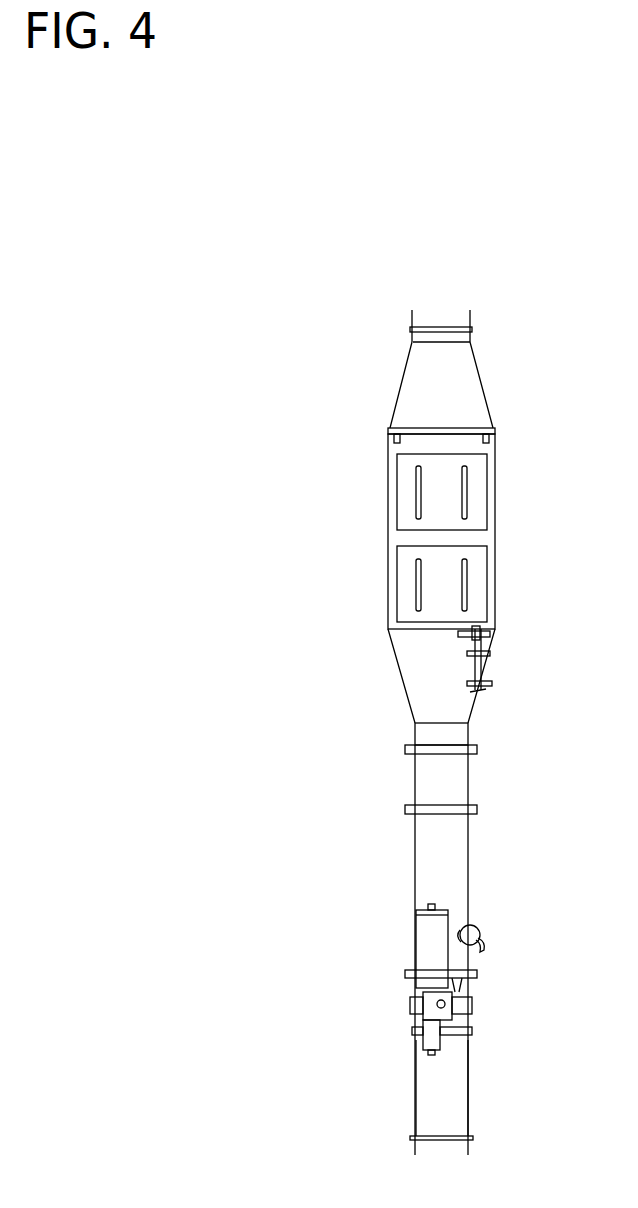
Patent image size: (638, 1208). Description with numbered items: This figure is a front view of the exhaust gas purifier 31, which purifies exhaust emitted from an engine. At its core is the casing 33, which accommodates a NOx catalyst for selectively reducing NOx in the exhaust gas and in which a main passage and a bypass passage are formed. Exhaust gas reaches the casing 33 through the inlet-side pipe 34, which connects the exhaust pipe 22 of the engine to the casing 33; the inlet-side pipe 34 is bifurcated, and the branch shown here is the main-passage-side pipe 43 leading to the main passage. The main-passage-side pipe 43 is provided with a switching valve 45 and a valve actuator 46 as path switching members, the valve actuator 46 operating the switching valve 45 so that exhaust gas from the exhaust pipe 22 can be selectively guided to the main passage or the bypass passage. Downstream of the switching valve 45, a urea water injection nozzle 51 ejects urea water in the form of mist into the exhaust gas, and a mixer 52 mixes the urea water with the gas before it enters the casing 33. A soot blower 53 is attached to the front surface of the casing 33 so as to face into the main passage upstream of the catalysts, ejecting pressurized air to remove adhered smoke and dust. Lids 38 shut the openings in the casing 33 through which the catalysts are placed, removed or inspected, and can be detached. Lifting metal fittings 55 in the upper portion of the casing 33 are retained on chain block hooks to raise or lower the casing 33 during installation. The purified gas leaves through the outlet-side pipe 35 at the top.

The exhaust pipe 22 is at (462, 1147).
The exhaust gas purifier 31 is at (262, 362).
The casing 33 is at (538, 478).
The inlet-side pipe 34 is at (460, 1090).
The outlet-side pipe 35 is at (472, 318).
The lid 38 is at (405, 483).
The main-passage-side pipe 43 is at (427, 848).
The switching valve 45 is at (465, 1005).
The valve actuator 46 is at (420, 947).
The urea water injection nozzle 51 is at (474, 925).
The mixer 52 is at (460, 790).
The soot blower 53 is at (509, 663).
The lifting metal fitting 55 is at (390, 438).